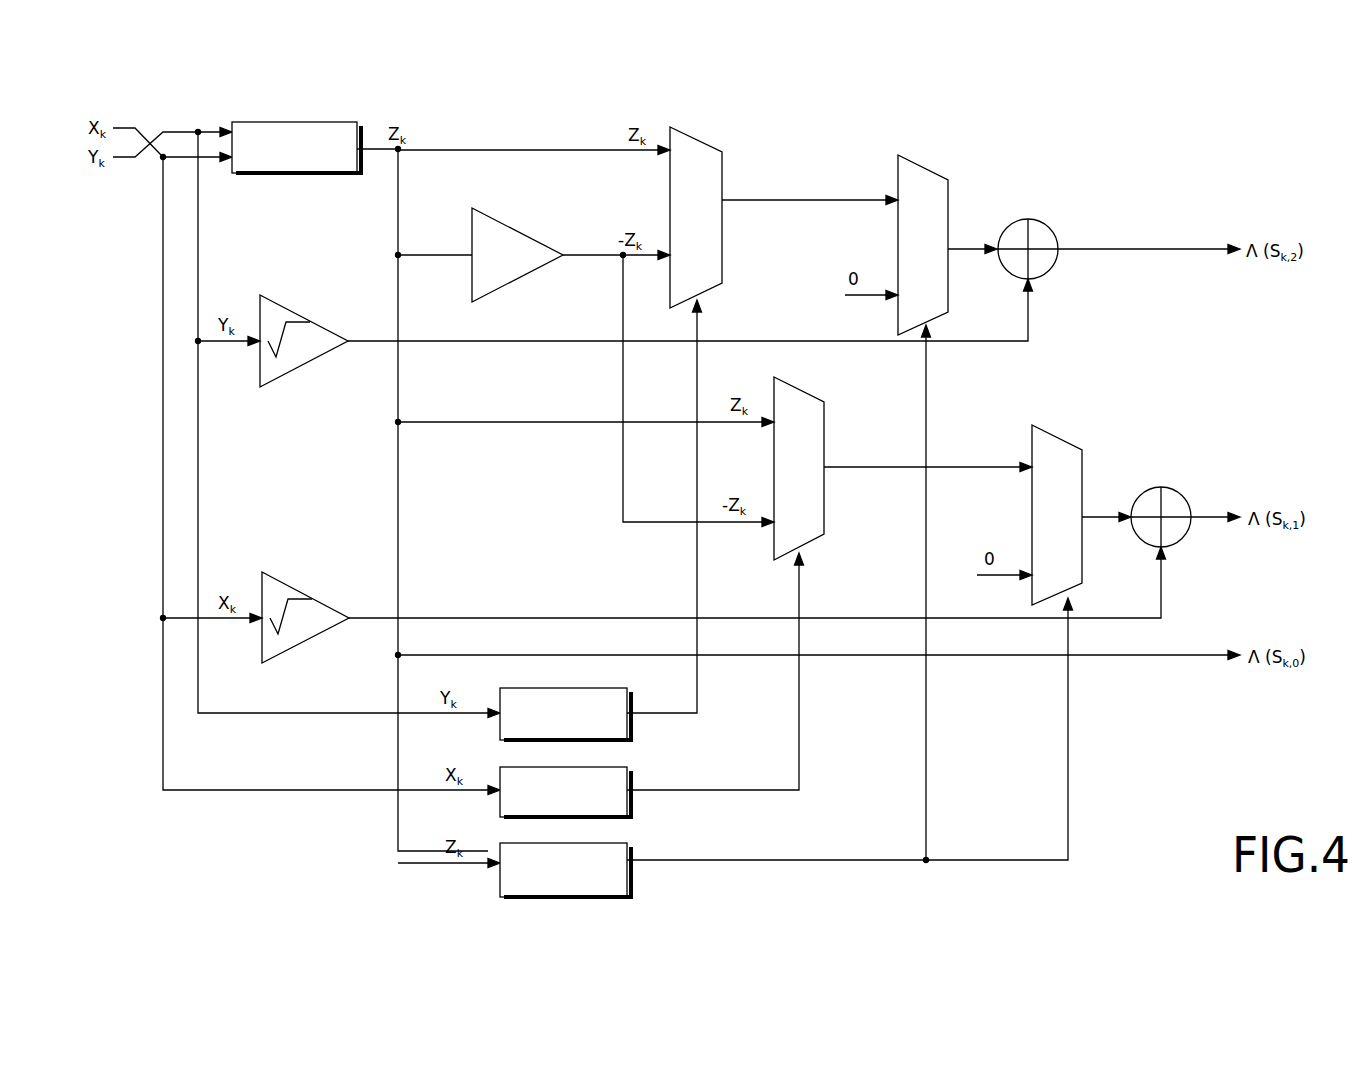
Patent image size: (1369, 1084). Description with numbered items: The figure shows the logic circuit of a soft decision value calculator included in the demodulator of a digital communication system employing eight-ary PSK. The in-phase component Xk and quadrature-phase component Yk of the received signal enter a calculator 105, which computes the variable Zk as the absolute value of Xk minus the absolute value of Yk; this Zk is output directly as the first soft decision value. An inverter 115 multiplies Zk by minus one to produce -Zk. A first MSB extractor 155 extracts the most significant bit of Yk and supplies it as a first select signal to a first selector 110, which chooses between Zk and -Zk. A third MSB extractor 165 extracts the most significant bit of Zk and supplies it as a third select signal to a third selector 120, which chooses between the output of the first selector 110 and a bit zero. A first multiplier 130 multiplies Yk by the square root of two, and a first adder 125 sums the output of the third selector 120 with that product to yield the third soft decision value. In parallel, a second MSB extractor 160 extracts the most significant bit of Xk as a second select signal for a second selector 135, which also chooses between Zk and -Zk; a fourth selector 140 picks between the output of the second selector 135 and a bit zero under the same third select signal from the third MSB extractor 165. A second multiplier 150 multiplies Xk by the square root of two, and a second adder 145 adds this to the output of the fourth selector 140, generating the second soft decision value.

The calculator 105 is at (296, 122).
The first selector 110 is at (702, 141).
The inverter 115 is at (520, 228).
The third selector 120 is at (924, 166).
The first adder 125 is at (1030, 219).
The first multiplier 130 is at (302, 318).
The second selector 135 is at (824, 402).
The fourth selector 140 is at (1080, 450).
The second adder 145 is at (1162, 488).
The second multiplier 150 is at (308, 596).
The first MSB extractor 155 is at (631, 738).
The second MSB extractor 160 is at (631, 815).
The third MSB extractor 165 is at (631, 895).